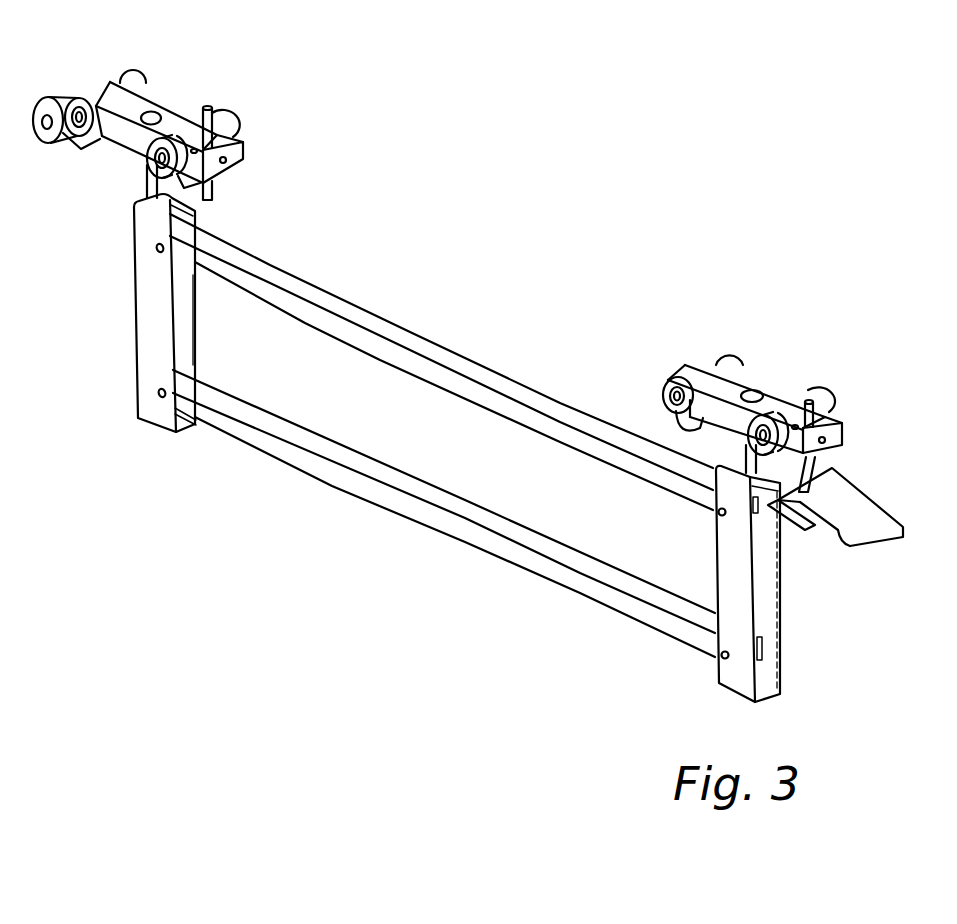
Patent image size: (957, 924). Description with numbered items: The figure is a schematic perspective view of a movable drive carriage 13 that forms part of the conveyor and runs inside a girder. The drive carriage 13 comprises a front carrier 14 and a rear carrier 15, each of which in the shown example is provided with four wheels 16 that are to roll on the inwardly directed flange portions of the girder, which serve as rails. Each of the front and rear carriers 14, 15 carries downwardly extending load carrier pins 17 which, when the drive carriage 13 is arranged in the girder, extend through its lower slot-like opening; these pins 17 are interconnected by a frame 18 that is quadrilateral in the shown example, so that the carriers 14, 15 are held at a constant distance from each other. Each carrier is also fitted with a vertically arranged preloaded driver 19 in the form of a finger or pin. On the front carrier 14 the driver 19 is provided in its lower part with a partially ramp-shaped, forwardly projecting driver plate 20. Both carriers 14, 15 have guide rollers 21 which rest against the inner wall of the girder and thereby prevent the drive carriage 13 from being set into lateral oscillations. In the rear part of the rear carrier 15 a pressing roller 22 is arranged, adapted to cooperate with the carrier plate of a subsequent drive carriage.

The drive carriage 13 is at (457, 417).
The front carrier 14 is at (697, 370).
The rear carrier 15 is at (172, 118).
The wheels 16 is at (80, 155).
The load carrier pins 17 is at (148, 176).
The frame 18 is at (451, 353).
The driver 19 is at (207, 190).
The driver plate 20 is at (842, 530).
The guide rollers 21 is at (178, 178).
The pressing roller 22 is at (55, 95).